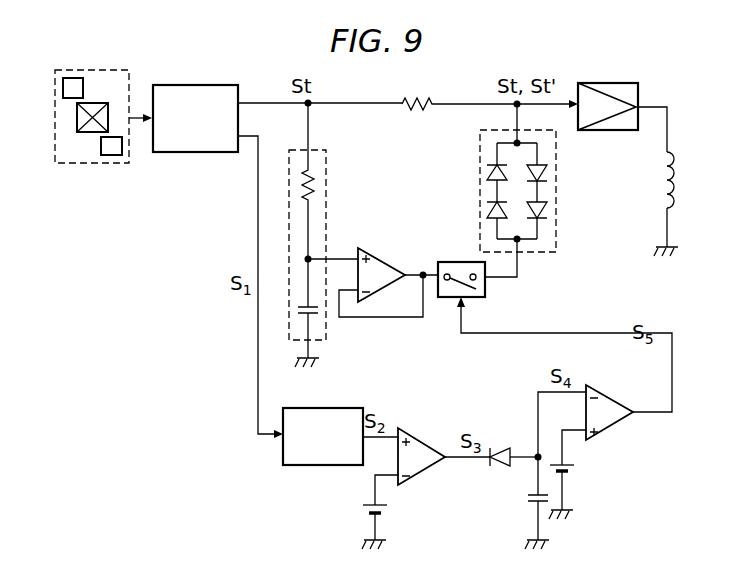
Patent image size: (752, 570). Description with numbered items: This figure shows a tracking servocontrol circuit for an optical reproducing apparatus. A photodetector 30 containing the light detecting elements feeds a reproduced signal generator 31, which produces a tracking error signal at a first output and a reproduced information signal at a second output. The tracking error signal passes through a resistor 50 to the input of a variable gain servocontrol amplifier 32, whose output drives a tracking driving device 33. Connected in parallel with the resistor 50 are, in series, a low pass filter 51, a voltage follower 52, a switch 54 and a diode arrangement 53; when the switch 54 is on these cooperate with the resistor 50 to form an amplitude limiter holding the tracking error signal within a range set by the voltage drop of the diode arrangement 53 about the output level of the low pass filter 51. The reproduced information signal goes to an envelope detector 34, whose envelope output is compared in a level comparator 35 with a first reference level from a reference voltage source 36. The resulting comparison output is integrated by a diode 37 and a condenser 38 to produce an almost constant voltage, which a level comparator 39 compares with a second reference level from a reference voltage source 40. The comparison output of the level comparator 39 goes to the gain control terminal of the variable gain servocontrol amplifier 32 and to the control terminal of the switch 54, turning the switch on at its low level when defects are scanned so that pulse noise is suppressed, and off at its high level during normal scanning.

The photodetector 30 is at (100, 163).
The reproduced signal generator 31 is at (200, 152).
The variable gain servocontrol amplifier 32 is at (612, 132).
The tracking driving device 33 is at (665, 190).
The envelope detector 34 is at (328, 408).
The level comparator 35 is at (428, 446).
The reference voltage source 36 is at (361, 509).
The diode 37 is at (501, 446).
The condenser 38 is at (526, 501).
The level comparator 39 is at (613, 425).
The reference voltage source 40 is at (576, 476).
The resistor 50 is at (424, 111).
The low pass filter 51 is at (327, 325).
The voltage follower 52 is at (386, 250).
The diode arrangement 53 is at (528, 256).
The switch 54 is at (450, 262).